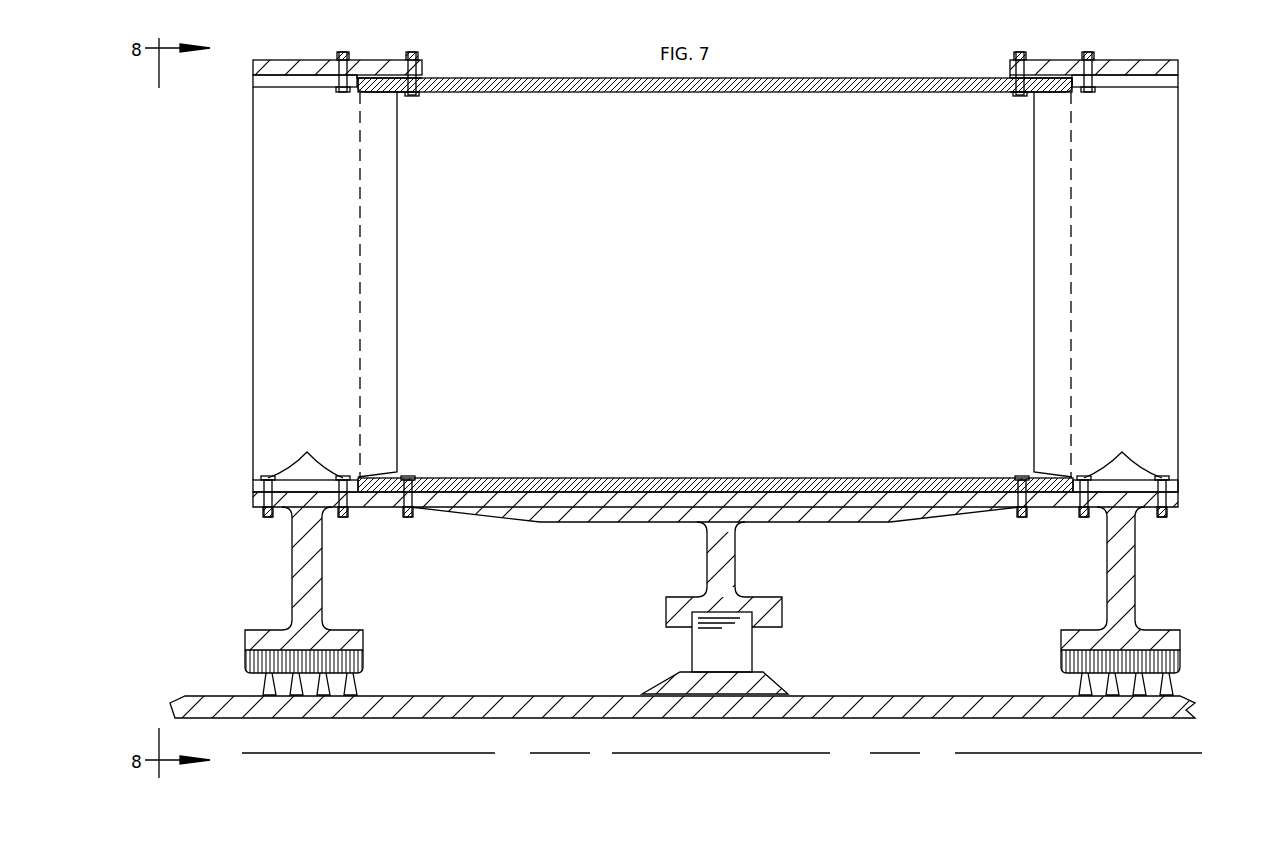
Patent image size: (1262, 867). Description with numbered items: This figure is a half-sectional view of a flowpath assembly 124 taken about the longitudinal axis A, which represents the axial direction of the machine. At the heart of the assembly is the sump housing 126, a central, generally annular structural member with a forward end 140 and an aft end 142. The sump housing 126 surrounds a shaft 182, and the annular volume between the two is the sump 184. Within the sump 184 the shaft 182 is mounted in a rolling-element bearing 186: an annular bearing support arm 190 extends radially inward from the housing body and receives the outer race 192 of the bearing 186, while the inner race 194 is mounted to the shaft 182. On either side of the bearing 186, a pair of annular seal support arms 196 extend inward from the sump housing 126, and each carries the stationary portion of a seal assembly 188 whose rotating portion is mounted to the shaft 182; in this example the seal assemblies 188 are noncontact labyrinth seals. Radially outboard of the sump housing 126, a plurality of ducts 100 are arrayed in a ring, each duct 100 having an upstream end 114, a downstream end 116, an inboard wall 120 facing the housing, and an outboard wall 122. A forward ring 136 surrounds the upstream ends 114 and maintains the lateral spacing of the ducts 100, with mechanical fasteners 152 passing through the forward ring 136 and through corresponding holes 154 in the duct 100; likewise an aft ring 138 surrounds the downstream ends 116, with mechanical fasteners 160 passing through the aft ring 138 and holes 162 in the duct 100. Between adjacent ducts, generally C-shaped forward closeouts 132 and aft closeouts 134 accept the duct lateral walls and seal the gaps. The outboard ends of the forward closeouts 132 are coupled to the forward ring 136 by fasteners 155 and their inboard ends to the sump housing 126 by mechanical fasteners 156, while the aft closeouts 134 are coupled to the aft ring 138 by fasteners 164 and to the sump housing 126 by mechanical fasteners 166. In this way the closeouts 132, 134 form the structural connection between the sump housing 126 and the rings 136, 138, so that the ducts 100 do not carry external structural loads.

The duct 100 is at (580, 83).
The upstream end 114 is at (363, 135).
The downstream end 116 is at (1068, 139).
The inboard wall 120 is at (505, 478).
The outboard wall 122 is at (718, 94).
The flowpath assembly 124 is at (834, 62).
The sump housing 126 is at (572, 524).
The forward closeout 132 is at (399, 188).
The aft closeout 134 is at (1032, 184).
The forward ring 136 is at (305, 62).
The aft ring 138 is at (1047, 62).
The forward end 140 is at (252, 503).
The aft end 142 is at (1180, 506).
The mechanical fastener 152 is at (411, 54).
The hole 154 is at (416, 88).
The fastener 155 is at (342, 54).
The mechanical fastener 156 is at (305, 475).
The mechanical fastener 160 is at (1016, 55).
The hole 162 is at (1012, 92).
The fastener 164 is at (1093, 55).
The mechanical fastener 166 is at (1123, 466).
The shaft 182 is at (448, 694).
The sump 184 is at (515, 606).
The rolling-element bearing 186 is at (778, 652).
The seal assembly 188 is at (372, 650).
The bearing support arm 190 is at (737, 570).
The outer race 192 is at (672, 612).
The inner race 194 is at (770, 682).
The seal support arm 196 is at (312, 584).
The longitudinal axis A is at (438, 752).